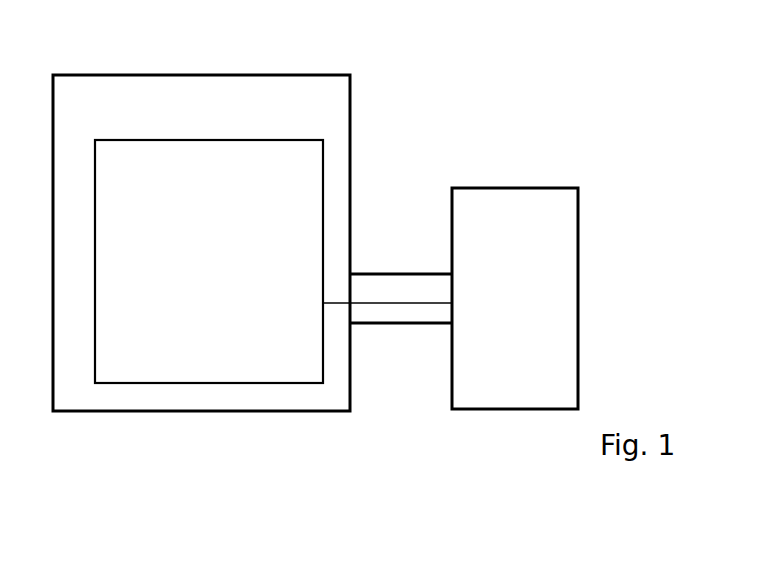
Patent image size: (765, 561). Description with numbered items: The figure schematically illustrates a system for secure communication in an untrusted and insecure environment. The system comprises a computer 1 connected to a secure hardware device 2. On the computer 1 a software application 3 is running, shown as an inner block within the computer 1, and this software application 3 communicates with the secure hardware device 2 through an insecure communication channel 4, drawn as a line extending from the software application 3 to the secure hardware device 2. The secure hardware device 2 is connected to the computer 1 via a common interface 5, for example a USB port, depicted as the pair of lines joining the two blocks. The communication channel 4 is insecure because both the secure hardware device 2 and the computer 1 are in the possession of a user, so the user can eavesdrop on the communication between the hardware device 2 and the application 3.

The computer 1 is at (351, 158).
The secure hardware device 2 is at (472, 187).
The software application 3 is at (148, 383).
The insecure communication channel 4 is at (408, 305).
The common interface 5 is at (443, 325).